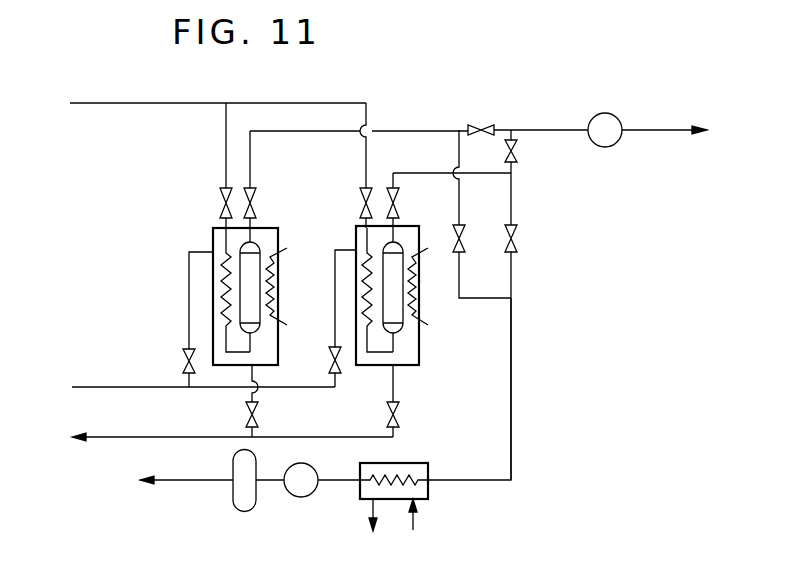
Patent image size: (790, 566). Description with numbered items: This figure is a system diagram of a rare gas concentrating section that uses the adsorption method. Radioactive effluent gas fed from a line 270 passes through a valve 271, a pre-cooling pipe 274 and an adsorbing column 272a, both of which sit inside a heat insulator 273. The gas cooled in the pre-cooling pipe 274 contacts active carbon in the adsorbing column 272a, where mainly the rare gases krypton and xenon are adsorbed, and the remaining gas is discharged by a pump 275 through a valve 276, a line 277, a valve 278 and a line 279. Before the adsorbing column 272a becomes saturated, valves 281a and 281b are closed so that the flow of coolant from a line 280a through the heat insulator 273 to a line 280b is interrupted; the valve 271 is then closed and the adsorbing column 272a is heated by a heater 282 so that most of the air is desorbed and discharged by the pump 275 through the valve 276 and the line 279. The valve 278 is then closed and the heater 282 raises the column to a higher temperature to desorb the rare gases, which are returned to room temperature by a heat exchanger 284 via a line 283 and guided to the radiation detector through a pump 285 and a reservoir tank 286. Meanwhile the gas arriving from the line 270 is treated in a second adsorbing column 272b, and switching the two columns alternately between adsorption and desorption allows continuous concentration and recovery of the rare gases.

The line 270 is at (110, 102).
The valve 271 is at (220, 196).
The adsorbing column 272a is at (260, 245).
The second adsorbing column 272b is at (404, 332).
The heat insulator 273 is at (213, 233).
The pre-cooling pipe 274 is at (218, 278).
The pump 275 is at (594, 118).
The valve 276 is at (256, 196).
The line 277 is at (407, 128).
The valve 278 is at (481, 124).
The line 279 is at (657, 128).
The line 280a is at (88, 385).
The line 280b is at (106, 438).
The valve 281a is at (184, 356).
The valve 281b is at (247, 412).
The heater 282 is at (284, 323).
The line 283 is at (514, 350).
The heat exchanger 284 is at (428, 495).
The pump 285 is at (301, 497).
The reservoir tank 286 is at (244, 512).